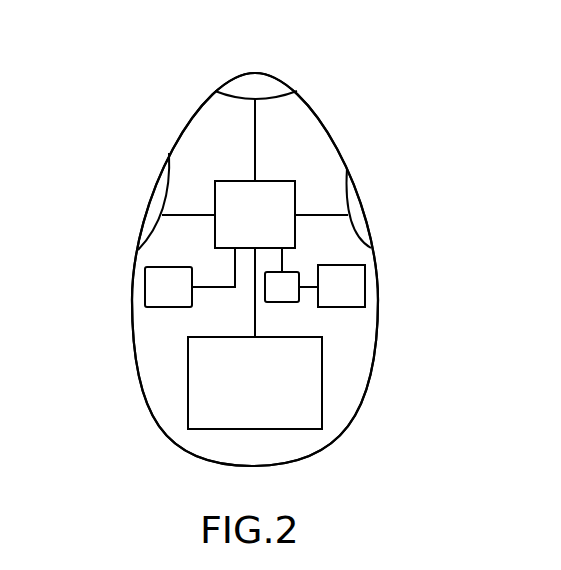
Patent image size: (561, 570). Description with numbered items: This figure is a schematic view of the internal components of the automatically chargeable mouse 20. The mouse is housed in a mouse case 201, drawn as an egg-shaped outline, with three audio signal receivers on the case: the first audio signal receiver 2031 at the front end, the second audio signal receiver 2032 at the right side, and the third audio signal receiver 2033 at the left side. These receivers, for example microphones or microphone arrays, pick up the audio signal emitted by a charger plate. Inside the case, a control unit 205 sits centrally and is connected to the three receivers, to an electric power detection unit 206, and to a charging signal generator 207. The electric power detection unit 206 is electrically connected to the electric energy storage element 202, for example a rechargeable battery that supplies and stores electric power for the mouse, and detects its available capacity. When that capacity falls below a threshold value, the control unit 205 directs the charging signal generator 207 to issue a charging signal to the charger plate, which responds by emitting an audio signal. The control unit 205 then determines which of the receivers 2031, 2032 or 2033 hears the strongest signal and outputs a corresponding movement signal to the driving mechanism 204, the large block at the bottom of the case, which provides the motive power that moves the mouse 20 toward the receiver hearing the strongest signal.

The automatically chargeable mouse 20 is at (303, 40).
The mouse case 201 is at (148, 398).
The first audio signal receiver 2031 is at (243, 83).
The second audio signal receiver 2032 is at (361, 224).
The third audio signal receiver 2033 is at (152, 213).
The control unit 205 is at (230, 200).
The electric power detection unit 206 is at (288, 280).
The charging signal generator 207 is at (158, 290).
The electric energy storage element 202 is at (353, 289).
The driving mechanism 204 is at (302, 382).